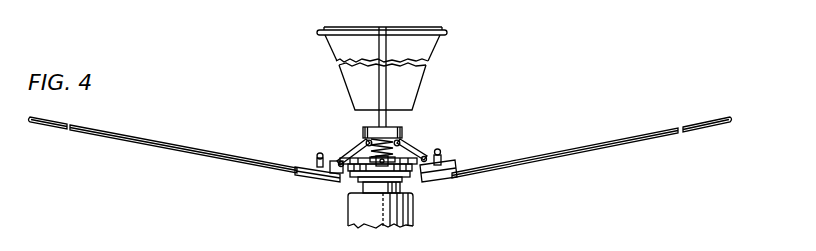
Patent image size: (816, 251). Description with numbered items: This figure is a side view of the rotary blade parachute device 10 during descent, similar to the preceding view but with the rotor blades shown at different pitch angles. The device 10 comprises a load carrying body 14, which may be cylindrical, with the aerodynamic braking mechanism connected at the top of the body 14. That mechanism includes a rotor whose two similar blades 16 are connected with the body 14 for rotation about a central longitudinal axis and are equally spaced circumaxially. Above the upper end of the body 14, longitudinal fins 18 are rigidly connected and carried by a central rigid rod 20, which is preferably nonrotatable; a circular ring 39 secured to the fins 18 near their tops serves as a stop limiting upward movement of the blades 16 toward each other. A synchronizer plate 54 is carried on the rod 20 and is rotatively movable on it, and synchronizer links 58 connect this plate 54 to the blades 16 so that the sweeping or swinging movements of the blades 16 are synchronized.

The rotary blade parachute device 10 is at (343, 198).
The load carrying body 14 is at (413, 208).
The blade 16 is at (140, 138).
The longitudinal fin 18 is at (421, 78).
The central rigid rod 20 is at (388, 122).
The circular ring 39 is at (448, 33).
The synchronizer plate 54 is at (362, 133).
The synchronizer link 58 is at (343, 156).